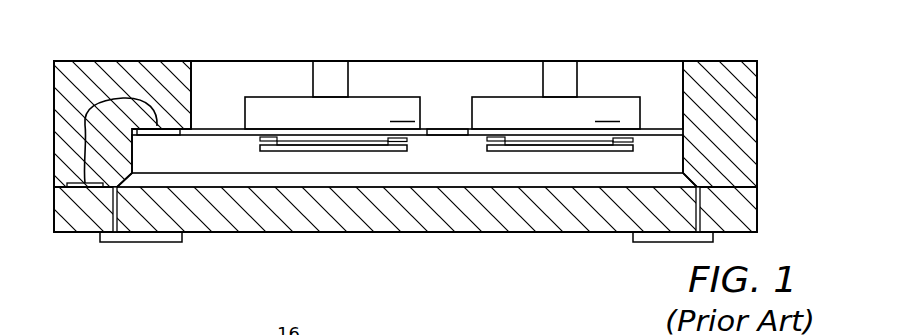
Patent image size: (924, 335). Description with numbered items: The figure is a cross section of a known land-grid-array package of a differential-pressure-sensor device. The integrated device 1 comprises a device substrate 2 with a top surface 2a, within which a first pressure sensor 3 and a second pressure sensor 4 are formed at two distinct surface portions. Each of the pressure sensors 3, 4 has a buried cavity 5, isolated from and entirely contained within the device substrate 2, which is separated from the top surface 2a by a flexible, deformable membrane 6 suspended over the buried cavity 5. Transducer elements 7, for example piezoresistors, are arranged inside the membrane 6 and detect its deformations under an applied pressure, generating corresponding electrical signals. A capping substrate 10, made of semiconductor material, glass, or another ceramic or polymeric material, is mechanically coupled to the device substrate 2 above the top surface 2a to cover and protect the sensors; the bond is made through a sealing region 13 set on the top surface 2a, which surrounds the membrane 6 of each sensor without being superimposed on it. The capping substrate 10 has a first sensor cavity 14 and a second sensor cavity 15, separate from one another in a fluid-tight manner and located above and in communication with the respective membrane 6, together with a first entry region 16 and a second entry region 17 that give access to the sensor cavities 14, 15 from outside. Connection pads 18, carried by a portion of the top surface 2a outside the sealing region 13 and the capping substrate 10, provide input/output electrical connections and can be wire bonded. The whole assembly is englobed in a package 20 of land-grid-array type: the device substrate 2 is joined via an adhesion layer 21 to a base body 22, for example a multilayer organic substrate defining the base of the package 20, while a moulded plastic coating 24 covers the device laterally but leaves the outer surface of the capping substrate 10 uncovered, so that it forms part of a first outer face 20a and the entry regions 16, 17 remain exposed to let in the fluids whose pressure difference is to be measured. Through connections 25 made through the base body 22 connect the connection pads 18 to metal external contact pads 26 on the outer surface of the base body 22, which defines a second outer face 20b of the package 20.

The integrated device 1 is at (765, 38).
The device substrate 2 is at (237, 145).
The top surface 2a is at (125, 128).
The first pressure sensor 3 is at (150, 146).
The second pressure sensor 4 is at (652, 146).
The buried cavity 5 is at (289, 138).
The membrane 6 is at (337, 141).
The transducer elements 7 is at (273, 137).
The capping substrate 10 is at (220, 97).
The sealing region 13 is at (443, 129).
The first sensor cavity 14 is at (332, 113).
The second sensor cavity 15 is at (556, 113).
The first entry region 16 is at (326, 70).
The second entry region 17 is at (552, 68).
The connection pads 18 is at (167, 130).
The package 20 is at (775, 128).
The first outer face 20a is at (100, 52).
The second outer face 20b is at (61, 246).
The adhesion layer 21 is at (427, 182).
The base body 22 is at (525, 220).
The coating 24 is at (62, 100).
The through connections 25 is at (115, 212).
The external contact pads 26 is at (177, 238).